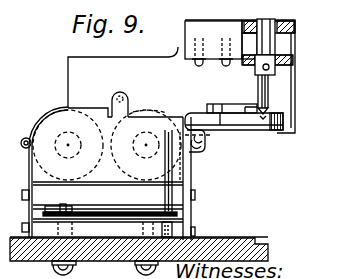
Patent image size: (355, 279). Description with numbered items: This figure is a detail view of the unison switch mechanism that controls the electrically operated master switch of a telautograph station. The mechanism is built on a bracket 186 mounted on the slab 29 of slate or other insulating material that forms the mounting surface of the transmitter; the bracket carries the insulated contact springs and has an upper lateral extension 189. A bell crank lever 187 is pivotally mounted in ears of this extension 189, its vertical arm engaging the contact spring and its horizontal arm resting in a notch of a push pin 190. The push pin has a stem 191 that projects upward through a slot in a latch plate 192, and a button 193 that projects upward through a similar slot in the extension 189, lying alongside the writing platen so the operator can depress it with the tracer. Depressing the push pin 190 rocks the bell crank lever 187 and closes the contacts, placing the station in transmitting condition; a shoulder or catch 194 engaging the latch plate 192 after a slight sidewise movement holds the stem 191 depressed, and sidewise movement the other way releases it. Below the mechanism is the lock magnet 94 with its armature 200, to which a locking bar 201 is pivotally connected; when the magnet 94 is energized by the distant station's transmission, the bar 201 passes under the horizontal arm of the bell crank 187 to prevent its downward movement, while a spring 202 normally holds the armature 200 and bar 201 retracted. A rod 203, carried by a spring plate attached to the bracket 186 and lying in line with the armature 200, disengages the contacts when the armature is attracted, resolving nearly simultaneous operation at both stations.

The slab 29 is at (241, 243).
The magnet 94 is at (55, 108).
The bracket 186 is at (125, 82).
The bell crank lever 187 is at (248, 124).
The upper lateral extension 189 is at (295, 24).
The push pin 190 is at (272, 97).
The stem 191 is at (296, 43).
The latch plate 192 is at (293, 62).
The button 193 is at (266, 37).
The shoulder or catch 194 is at (277, 73).
The armature 200 is at (117, 117).
The locking bar 201 is at (203, 136).
The spring 202 is at (137, 202).
The rod 203 is at (124, 99).